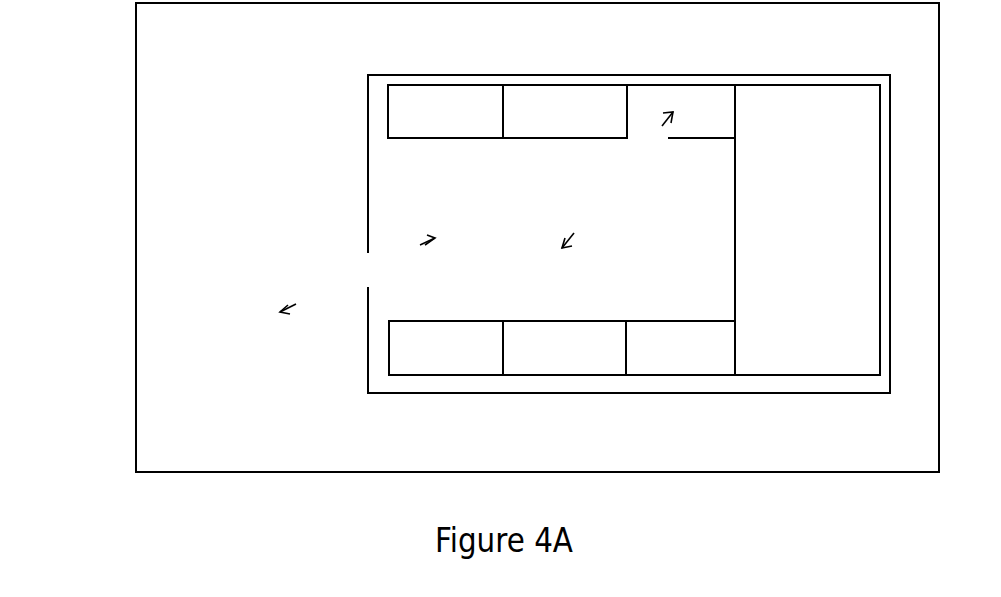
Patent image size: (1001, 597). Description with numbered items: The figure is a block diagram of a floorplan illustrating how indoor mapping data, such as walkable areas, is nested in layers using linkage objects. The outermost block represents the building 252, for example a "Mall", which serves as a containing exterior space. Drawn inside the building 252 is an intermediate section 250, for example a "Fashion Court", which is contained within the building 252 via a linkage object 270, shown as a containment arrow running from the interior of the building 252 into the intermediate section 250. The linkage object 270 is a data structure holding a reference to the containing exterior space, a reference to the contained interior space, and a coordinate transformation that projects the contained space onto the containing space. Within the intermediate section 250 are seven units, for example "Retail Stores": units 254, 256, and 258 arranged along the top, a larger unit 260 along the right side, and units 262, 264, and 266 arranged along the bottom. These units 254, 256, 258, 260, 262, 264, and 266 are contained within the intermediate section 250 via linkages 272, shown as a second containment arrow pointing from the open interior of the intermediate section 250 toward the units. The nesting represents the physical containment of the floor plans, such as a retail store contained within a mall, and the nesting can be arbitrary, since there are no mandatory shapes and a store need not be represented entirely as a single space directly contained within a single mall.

The intermediate section 250 is at (367, 90).
The building 252 is at (136, 222).
The unit 254 is at (448, 83).
The unit 256 is at (567, 83).
The unit 258 is at (690, 83).
The unit 260 is at (812, 83).
The unit 262 is at (413, 375).
The unit 264 is at (531, 375).
The unit 266 is at (648, 375).
The linkage object 270 is at (279, 308).
The linkages 272 is at (561, 246).